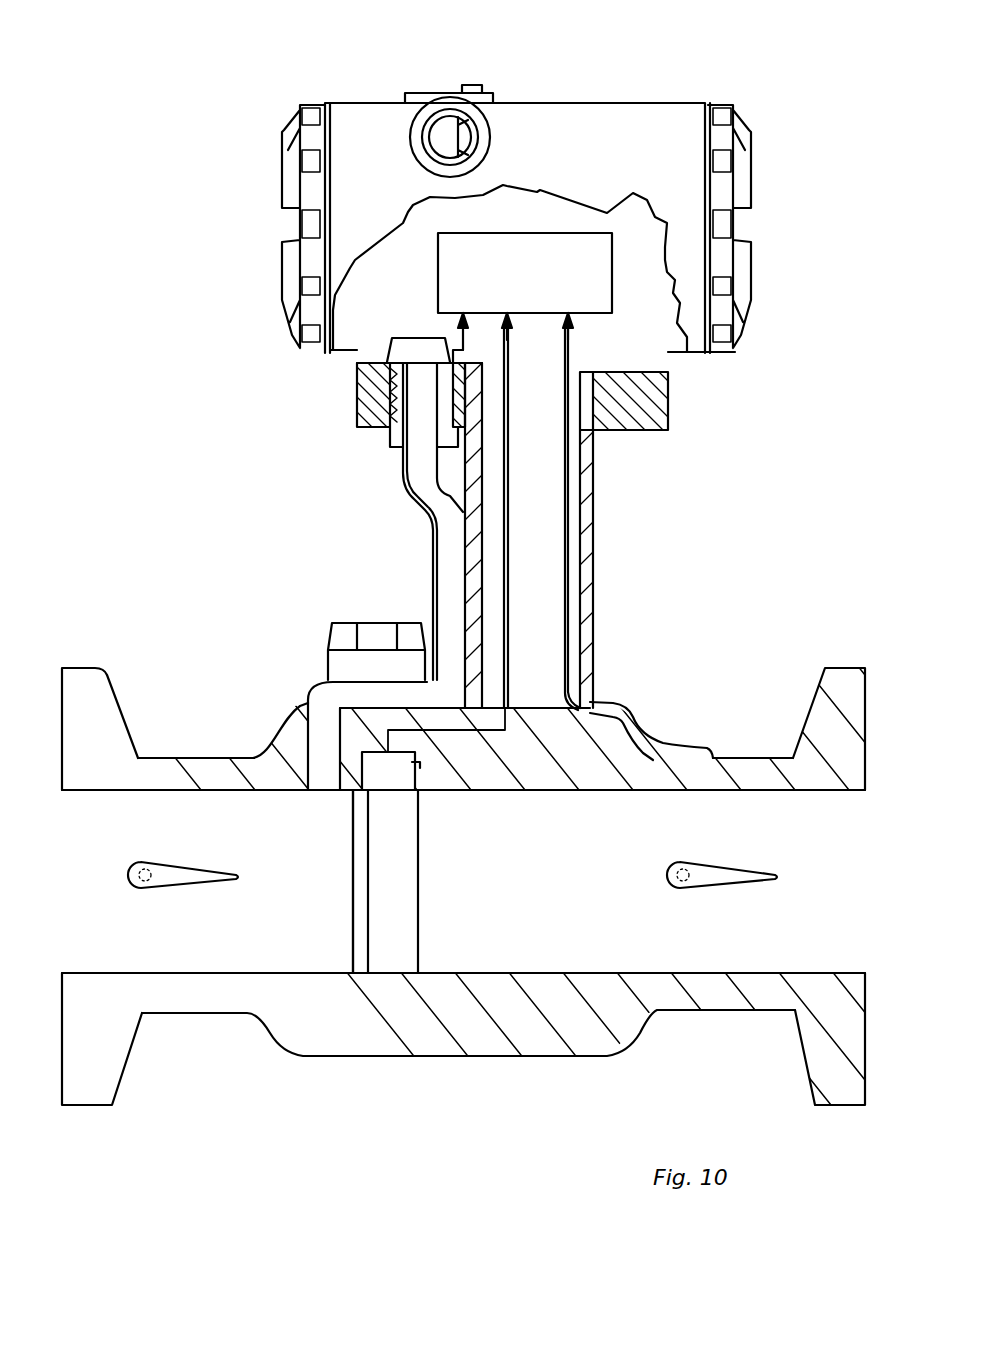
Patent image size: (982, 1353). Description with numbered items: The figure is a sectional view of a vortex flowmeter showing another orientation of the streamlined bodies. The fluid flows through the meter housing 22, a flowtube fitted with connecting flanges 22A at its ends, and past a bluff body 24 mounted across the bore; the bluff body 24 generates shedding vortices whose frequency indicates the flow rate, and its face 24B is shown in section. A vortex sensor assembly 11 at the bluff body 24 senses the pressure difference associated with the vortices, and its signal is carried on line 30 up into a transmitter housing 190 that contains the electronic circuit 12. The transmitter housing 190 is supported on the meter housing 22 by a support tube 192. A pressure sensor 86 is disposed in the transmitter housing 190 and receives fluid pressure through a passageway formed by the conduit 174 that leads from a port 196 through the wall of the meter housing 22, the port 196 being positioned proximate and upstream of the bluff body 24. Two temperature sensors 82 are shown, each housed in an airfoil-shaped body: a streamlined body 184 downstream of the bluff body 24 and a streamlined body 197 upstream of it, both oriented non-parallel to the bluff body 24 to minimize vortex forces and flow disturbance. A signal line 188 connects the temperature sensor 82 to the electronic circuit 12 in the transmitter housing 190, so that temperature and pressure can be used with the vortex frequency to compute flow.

The transmitter housing 190 is at (605, 103).
The electronic circuit 12 is at (613, 282).
The pressure sensor 86 is at (400, 338).
The conduit 174 is at (407, 493).
The line 30 is at (510, 515).
The support tube 192 is at (596, 548).
The signal line 188 is at (628, 703).
The meter housing 22 is at (718, 680).
The connecting flange 22A is at (62, 668).
The port 196 is at (313, 790).
The streamlined body 197 is at (170, 860).
The vortex sensor assembly 11 is at (420, 765).
The bluff body 24 is at (420, 873).
The orifice plate face 24B is at (352, 880).
The temperature sensor 82 is at (135, 897).
The streamlined body 184 is at (717, 867).